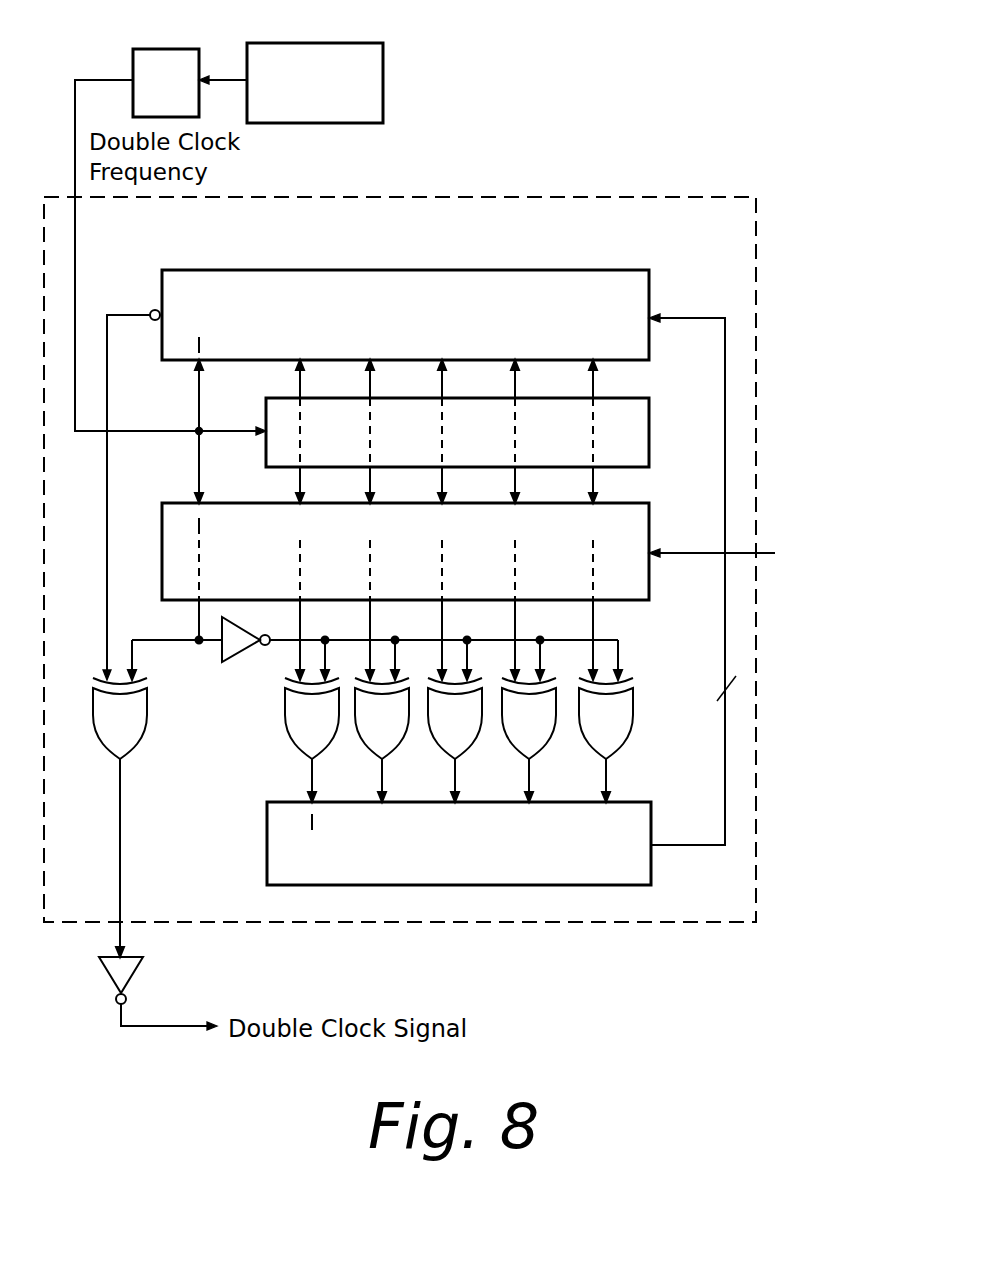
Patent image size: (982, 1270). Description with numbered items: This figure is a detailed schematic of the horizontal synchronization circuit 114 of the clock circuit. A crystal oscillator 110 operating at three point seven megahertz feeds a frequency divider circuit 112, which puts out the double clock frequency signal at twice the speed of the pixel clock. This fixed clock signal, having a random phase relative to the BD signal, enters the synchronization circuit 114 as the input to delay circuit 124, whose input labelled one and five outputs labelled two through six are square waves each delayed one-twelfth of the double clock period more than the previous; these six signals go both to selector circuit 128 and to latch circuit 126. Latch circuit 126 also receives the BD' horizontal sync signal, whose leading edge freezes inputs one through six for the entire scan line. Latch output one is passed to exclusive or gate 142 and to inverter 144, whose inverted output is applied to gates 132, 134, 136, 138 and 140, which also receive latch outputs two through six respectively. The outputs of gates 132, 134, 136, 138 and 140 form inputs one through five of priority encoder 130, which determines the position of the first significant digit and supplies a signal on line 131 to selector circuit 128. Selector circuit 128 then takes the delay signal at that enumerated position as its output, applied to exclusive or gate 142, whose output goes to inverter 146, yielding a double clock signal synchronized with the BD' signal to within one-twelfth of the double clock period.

The crystal oscillator 110 is at (383, 84).
The frequency divider circuit 112 is at (155, 48).
The synchronization circuit 114 is at (757, 311).
The delay circuit 124 is at (649, 444).
The latch circuit 126 is at (649, 539).
The selector circuit 128 is at (640, 270).
The priority encoder 130 is at (651, 829).
The line 131 is at (682, 318).
The gate 132 is at (331, 733).
The gate 134 is at (401, 733).
The gate 136 is at (474, 733).
The gate 138 is at (548, 733).
The gate 140 is at (625, 733).
The exclusive or gate 142 is at (139, 733).
The inverter 144 is at (243, 652).
The inverter 146 is at (134, 969).